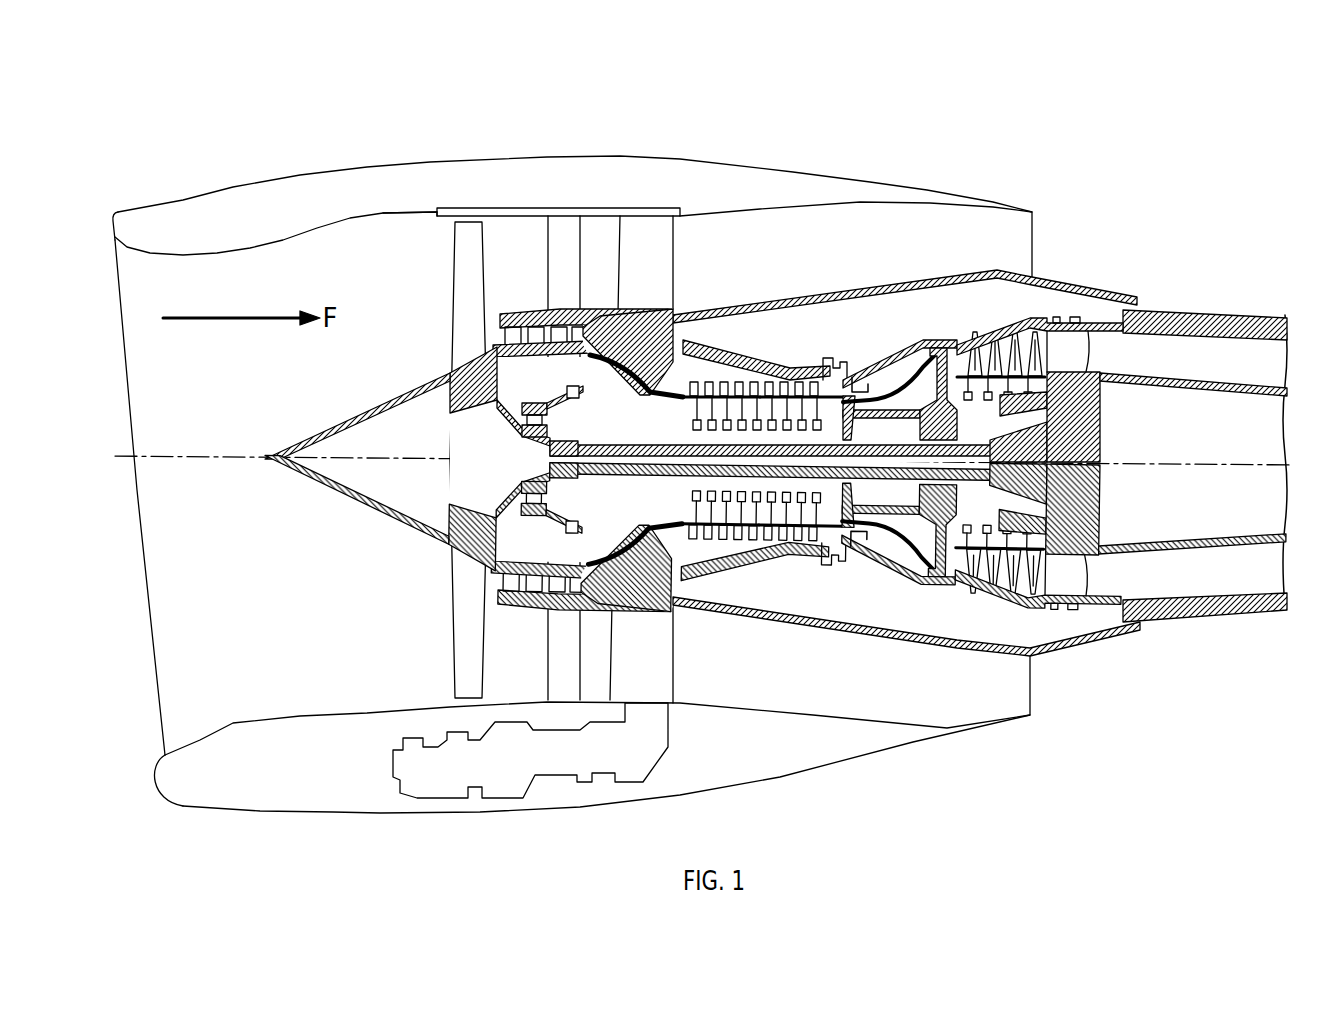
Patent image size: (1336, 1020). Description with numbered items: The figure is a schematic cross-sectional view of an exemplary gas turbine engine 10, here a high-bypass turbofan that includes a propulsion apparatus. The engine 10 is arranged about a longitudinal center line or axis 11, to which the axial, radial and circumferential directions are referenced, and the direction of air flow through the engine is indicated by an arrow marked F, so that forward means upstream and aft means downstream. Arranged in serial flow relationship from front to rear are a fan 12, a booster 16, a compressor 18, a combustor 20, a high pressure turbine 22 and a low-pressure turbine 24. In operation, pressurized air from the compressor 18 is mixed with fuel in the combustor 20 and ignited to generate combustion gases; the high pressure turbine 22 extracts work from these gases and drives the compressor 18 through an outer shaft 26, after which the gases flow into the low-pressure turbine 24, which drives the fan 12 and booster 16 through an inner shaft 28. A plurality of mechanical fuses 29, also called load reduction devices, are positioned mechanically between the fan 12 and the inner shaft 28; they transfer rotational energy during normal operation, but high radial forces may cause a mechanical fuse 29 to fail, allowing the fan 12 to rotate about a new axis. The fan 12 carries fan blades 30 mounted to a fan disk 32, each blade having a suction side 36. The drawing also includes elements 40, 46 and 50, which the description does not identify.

The gas turbine engine 10 is at (1058, 241).
The longitudinal center line or axis 11 is at (177, 457).
The fan 12 is at (690, 316).
The booster 16 is at (534, 600).
The compressor 18 is at (755, 361).
The combustor 20 is at (890, 372).
The high pressure turbine 22 is at (933, 582).
The low-pressure turbine 24 is at (980, 345).
The outer shaft 26 is at (878, 520).
The inner shaft 28 is at (597, 445).
The mechanical fuse 29 is at (580, 385).
The fan blade 30 is at (420, 320).
The fan disk 32 is at (462, 393).
The suction side 36 is at (688, 510).
The fan case 40 is at (553, 208).
The bearing support 46 is at (700, 530).
The fan case inlet 50 is at (437, 216).